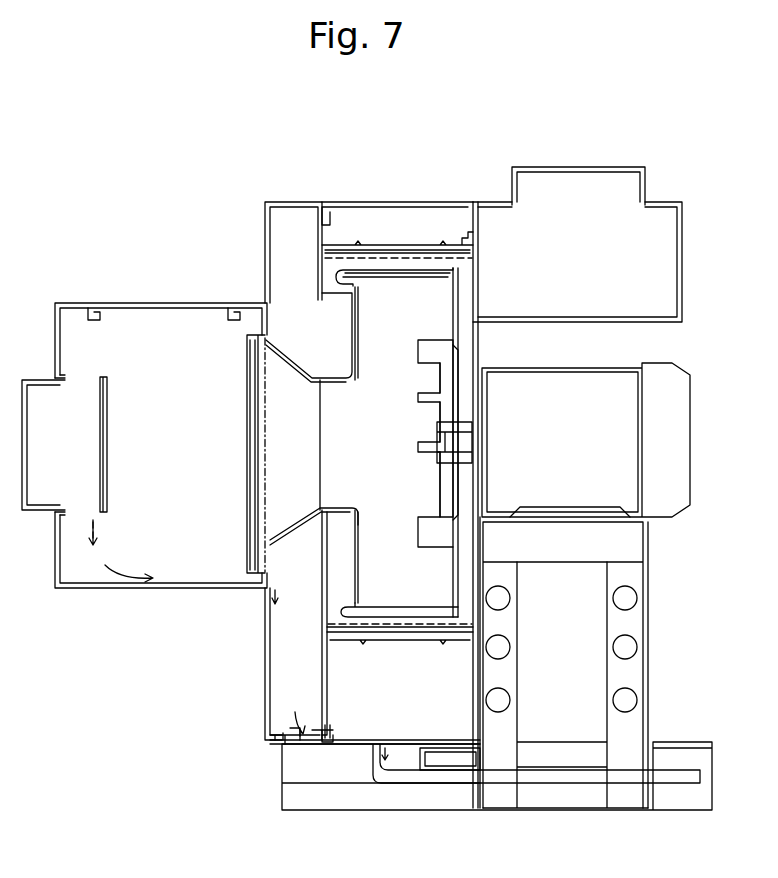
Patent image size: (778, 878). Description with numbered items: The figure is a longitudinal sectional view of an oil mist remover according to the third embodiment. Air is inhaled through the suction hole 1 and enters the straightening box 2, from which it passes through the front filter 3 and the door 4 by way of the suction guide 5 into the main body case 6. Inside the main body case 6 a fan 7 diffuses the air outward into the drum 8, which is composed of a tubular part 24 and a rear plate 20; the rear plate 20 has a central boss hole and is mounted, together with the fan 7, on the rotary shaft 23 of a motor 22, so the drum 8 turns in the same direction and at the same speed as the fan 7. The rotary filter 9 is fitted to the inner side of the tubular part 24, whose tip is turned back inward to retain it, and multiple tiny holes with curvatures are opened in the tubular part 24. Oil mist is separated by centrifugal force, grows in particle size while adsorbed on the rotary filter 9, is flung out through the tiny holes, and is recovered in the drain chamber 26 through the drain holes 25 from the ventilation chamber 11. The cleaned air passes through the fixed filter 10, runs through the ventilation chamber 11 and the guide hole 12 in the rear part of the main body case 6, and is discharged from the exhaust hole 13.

The suction hole 1 is at (45, 386).
The straightening box 2 is at (137, 320).
The front filter 3 is at (247, 394).
The door 4 is at (266, 245).
The suction guide 5 is at (285, 372).
The main body case 6 is at (350, 204).
The fan 7 is at (445, 344).
The drum 8 is at (370, 280).
The rotary filter 9 is at (400, 280).
The fixed filter 10 is at (424, 247).
The ventilation chamber 11 is at (386, 222).
The guide hole 12 is at (668, 265).
The exhaust hole 13 is at (603, 180).
The rear plate 20 is at (452, 576).
The motor 22 is at (668, 440).
The rotary shaft 23 is at (440, 446).
The tubular part 24 is at (384, 606).
The drain holes 25 is at (460, 736).
The drain chamber 26 is at (353, 732).